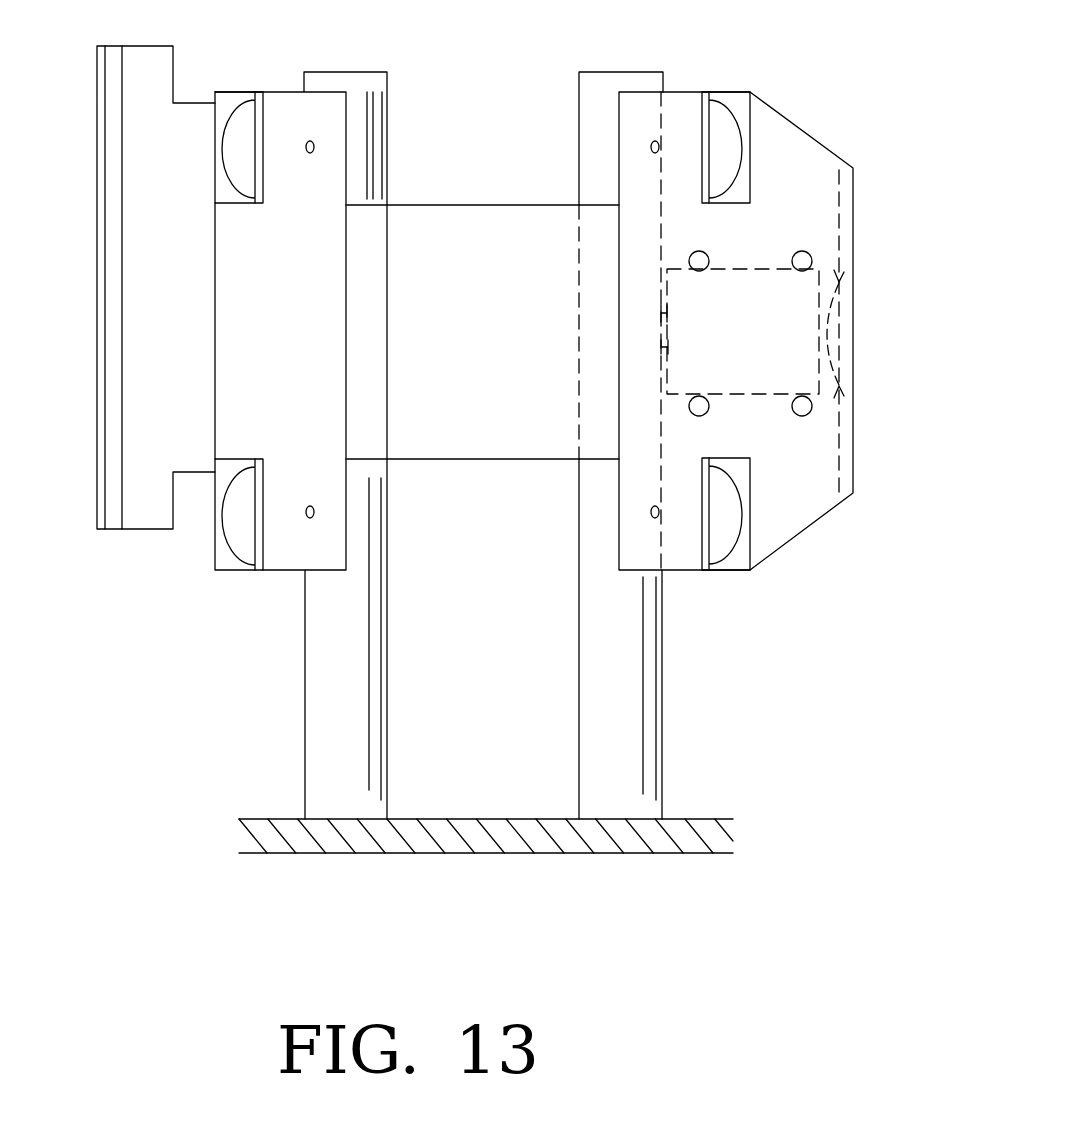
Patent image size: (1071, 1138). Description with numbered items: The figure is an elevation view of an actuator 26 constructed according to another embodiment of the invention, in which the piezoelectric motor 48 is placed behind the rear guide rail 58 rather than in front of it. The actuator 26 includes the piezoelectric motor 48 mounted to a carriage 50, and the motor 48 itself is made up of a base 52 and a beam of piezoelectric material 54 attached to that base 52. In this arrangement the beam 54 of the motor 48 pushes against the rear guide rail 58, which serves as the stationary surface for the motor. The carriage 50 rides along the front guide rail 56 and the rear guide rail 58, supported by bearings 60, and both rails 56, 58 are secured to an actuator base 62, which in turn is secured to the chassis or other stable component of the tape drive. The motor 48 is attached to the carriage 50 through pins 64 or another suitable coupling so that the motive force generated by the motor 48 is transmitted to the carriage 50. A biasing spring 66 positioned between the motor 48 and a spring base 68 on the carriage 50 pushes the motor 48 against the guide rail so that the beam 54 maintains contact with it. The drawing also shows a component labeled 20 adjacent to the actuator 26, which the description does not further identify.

The workpiece plate 20 is at (97, 143).
The actuator 26 is at (871, 214).
The piezoelectric motor 48 is at (745, 266).
The carriage 50 is at (478, 205).
The base 52 is at (676, 358).
The beam of piezoelectric material 54 is at (658, 297).
The front guide rail 56 is at (340, 72).
The rear guide rail 58 is at (618, 72).
The bearings 60 is at (243, 113).
The actuator base 62 is at (700, 819).
The pins 64 is at (700, 272).
The biasing spring 66 is at (846, 350).
The spring base 68 is at (842, 324).